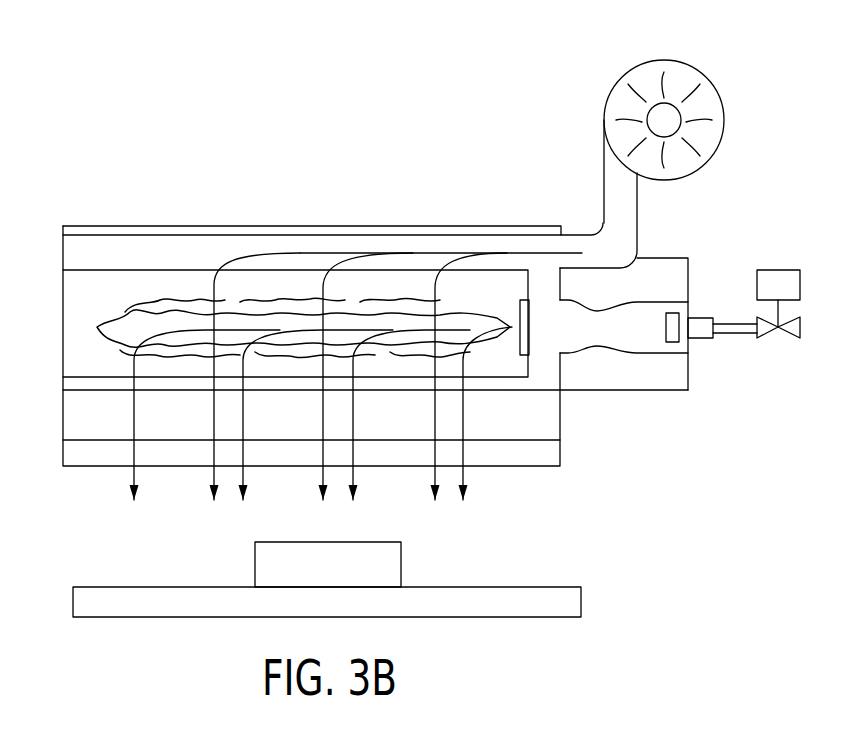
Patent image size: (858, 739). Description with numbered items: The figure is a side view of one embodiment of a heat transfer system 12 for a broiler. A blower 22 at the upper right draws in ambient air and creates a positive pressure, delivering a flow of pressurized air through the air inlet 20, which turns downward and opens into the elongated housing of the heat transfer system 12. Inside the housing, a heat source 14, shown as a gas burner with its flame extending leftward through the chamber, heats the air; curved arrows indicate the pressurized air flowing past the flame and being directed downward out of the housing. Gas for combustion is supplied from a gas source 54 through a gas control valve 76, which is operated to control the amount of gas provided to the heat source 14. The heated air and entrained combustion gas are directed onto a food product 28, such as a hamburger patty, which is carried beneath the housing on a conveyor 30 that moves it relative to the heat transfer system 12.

The heat transfer system 12 is at (95, 190).
The heat source 14 is at (547, 340).
The air inlet 20 is at (592, 252).
The blower 22 is at (707, 76).
The food product 28 is at (340, 578).
The conveyor 30 is at (228, 586).
The gas source 54 is at (800, 283).
The gas control valve 76 is at (787, 338).